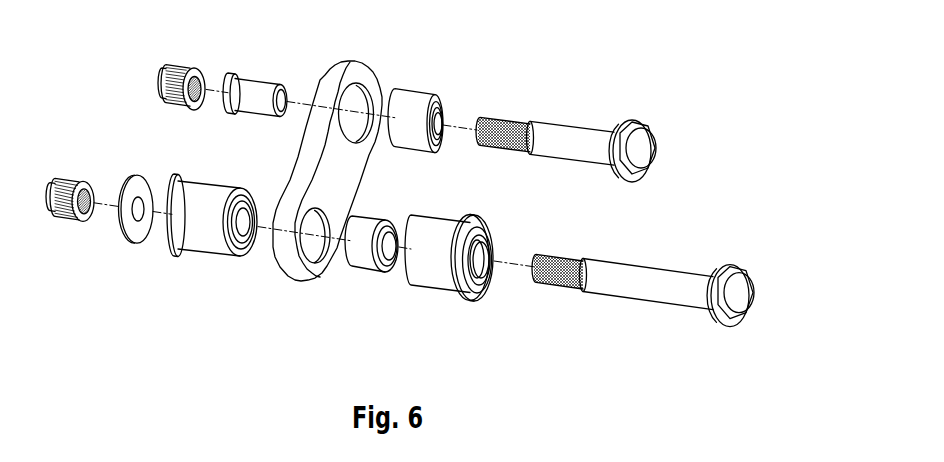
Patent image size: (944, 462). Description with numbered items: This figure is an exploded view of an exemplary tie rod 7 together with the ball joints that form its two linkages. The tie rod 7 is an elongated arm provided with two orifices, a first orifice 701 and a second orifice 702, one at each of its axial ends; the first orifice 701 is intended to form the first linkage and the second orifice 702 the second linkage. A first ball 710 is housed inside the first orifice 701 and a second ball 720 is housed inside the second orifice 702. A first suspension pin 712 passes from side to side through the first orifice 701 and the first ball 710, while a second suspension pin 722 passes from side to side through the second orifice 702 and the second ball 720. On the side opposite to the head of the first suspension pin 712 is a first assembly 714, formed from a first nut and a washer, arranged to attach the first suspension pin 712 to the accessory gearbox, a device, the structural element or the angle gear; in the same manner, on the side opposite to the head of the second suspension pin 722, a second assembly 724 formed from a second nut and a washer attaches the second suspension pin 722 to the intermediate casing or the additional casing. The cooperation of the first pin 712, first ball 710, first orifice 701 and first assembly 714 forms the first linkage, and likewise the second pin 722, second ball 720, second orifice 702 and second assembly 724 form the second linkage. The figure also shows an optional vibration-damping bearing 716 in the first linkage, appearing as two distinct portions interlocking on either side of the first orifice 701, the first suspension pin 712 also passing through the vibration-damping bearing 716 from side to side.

The tie rod 7 is at (340, 176).
The first orifice 701 is at (316, 255).
The second orifice 702 is at (362, 98).
The first ball 710 is at (370, 266).
The first suspension pin 712 is at (675, 280).
The first assembly 714 is at (69, 229).
The vibration-damping bearing 716 is at (207, 252).
The second ball 720 is at (413, 96).
The second suspension pin 722 is at (583, 132).
The second assembly 724 is at (157, 73).